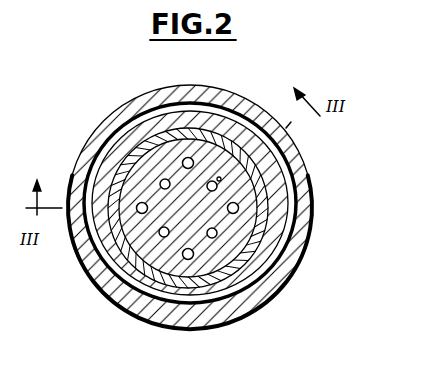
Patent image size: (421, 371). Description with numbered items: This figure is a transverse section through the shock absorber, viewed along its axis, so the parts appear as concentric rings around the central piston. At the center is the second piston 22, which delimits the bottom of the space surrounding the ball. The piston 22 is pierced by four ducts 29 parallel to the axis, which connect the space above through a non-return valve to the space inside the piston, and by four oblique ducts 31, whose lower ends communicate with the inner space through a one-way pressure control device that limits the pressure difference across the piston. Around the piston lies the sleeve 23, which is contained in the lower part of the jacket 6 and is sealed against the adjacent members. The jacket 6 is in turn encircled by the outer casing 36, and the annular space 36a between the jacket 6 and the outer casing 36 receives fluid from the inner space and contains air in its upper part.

The second piston 22 is at (306, 175).
The ducts 29 is at (182, 162).
The oblique ducts 31 is at (208, 190).
The sleeve 23 is at (255, 250).
The outer casing 36 is at (91, 271).
The space 36a is at (232, 296).
The jacket 6 is at (177, 297).